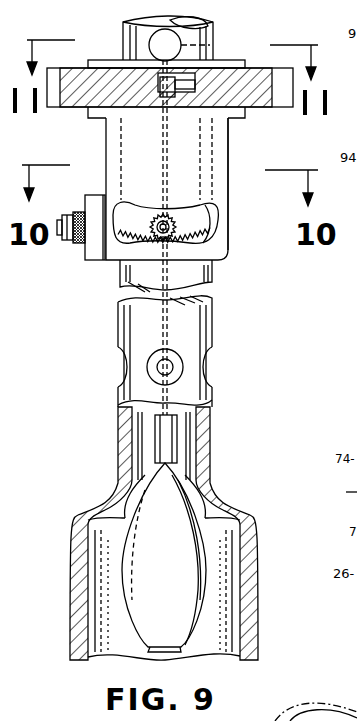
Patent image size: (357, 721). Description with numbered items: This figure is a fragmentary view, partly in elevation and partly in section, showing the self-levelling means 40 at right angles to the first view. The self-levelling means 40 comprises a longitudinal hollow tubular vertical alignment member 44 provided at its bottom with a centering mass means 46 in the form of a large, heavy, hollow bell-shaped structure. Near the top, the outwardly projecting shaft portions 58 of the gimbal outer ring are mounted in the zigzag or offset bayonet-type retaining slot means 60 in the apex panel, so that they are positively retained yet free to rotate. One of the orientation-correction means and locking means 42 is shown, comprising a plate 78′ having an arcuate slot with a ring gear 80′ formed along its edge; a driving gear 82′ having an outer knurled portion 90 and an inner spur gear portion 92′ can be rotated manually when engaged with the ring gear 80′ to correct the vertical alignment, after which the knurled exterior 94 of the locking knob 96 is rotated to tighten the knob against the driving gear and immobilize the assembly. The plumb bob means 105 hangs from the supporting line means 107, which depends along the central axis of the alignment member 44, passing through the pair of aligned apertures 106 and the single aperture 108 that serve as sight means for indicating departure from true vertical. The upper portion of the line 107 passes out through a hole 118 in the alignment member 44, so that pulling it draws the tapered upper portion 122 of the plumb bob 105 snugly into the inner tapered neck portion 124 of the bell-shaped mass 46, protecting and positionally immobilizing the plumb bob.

The hole 118 is at (215, 40).
The shaft portions 58 is at (176, 90).
The retaining slot means 60 is at (187, 100).
The plate 78′ is at (226, 170).
The driving gear 82′ is at (157, 195).
The orientation-correction means and locking means 42 is at (232, 203).
The knurled portion 90 is at (77, 212).
The locking knob 96 is at (65, 215).
The knurled exterior 94 is at (62, 240).
The ring gear 80′ is at (127, 232).
The spur gear portion 92′ is at (213, 238).
The longitudinal vertical alignment member 44 is at (213, 322).
The aligned apertures 106 is at (124, 366).
The single aperture 108 is at (172, 375).
The supporting line means 107 is at (208, 433).
The self-levelling means 40 is at (105, 450).
The inner tapered neck portion 124 is at (213, 487).
The tapered upper portion 122 is at (250, 524).
The centering mass means 46 is at (58, 542).
The plumb bob means 105 is at (186, 612).